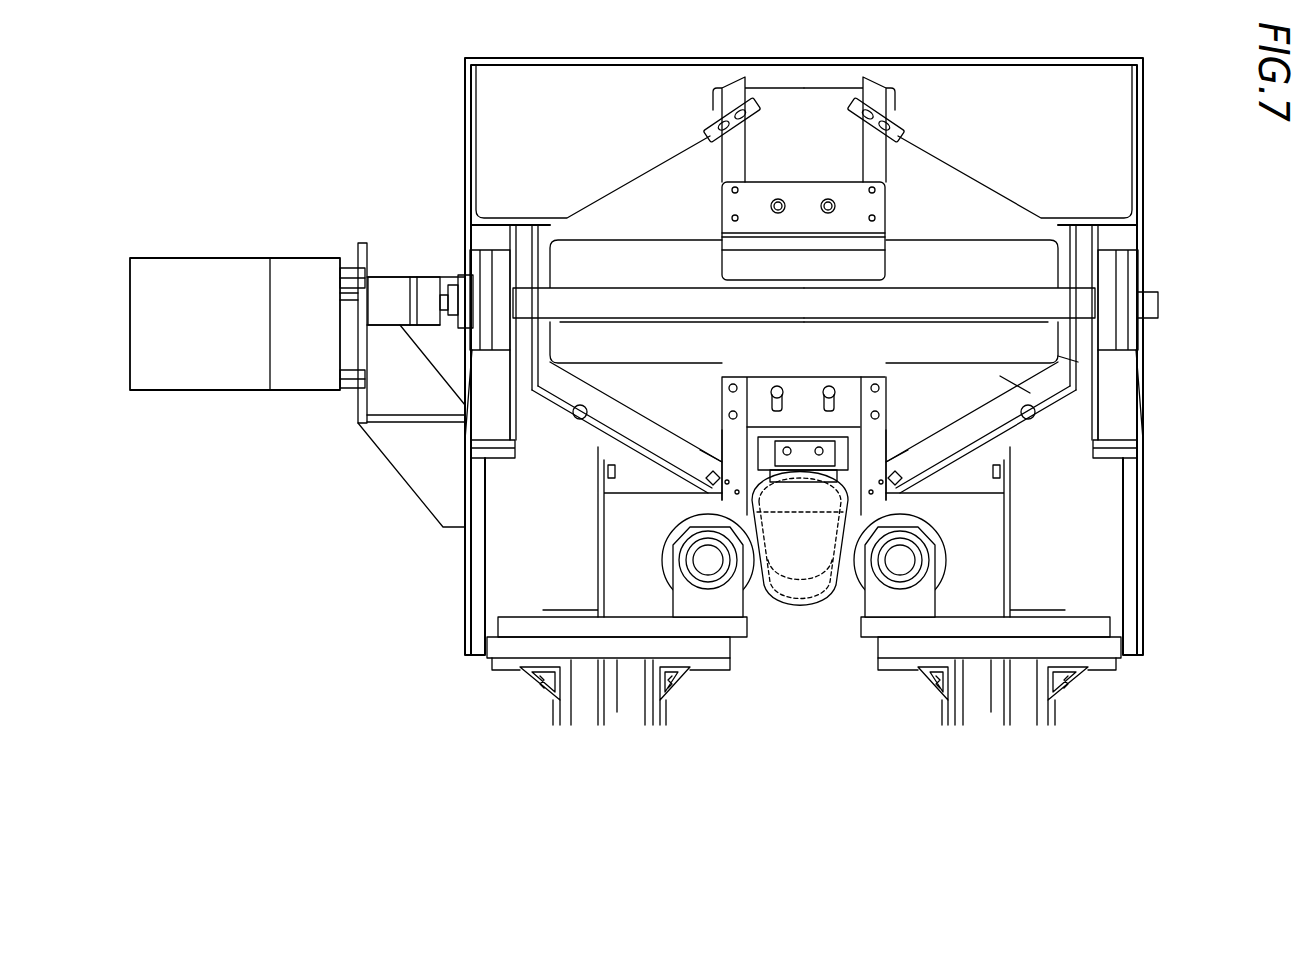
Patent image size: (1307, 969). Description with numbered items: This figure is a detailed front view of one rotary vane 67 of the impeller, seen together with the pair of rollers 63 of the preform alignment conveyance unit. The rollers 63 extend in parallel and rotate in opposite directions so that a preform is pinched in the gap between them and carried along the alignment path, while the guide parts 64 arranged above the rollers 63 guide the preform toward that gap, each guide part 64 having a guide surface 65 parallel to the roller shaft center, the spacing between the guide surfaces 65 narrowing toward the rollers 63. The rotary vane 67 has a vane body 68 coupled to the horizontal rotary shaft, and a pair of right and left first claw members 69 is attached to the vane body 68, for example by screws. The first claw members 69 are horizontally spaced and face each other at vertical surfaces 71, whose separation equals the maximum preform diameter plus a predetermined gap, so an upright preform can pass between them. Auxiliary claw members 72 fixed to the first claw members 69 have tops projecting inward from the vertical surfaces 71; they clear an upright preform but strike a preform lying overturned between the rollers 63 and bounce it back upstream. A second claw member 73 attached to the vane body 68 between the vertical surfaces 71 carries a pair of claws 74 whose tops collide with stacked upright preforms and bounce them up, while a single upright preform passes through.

The roller 63 is at (663, 567).
The guide part 64 is at (547, 392).
The guide surface 65 is at (584, 420).
The rotary vane 67 is at (1067, 353).
The vane body 68 is at (1012, 381).
The first claw member 69 is at (723, 443).
The vertical surface 71 is at (750, 432).
The auxiliary claw member 72 is at (706, 496).
The second claw member 73 is at (801, 462).
The claw 74 is at (780, 604).